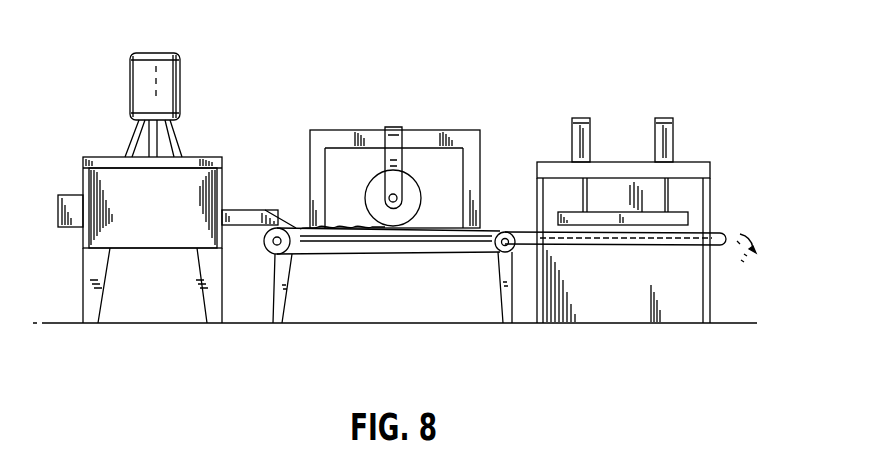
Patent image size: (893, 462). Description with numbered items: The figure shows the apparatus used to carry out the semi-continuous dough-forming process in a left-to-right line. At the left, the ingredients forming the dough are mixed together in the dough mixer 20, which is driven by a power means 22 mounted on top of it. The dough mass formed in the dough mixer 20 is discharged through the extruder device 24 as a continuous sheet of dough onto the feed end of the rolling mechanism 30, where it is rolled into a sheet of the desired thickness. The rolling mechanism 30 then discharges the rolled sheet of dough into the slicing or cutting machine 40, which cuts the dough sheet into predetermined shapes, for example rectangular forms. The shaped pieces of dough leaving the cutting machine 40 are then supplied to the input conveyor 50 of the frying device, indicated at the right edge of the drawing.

The dough mixer 20 is at (110, 138).
The power means 22 is at (165, 53).
The extruder device 24 is at (262, 208).
The rolling mechanism 30 is at (465, 128).
The slicing or cutting machine 40 is at (685, 152).
The input conveyor 50 is at (781, 279).